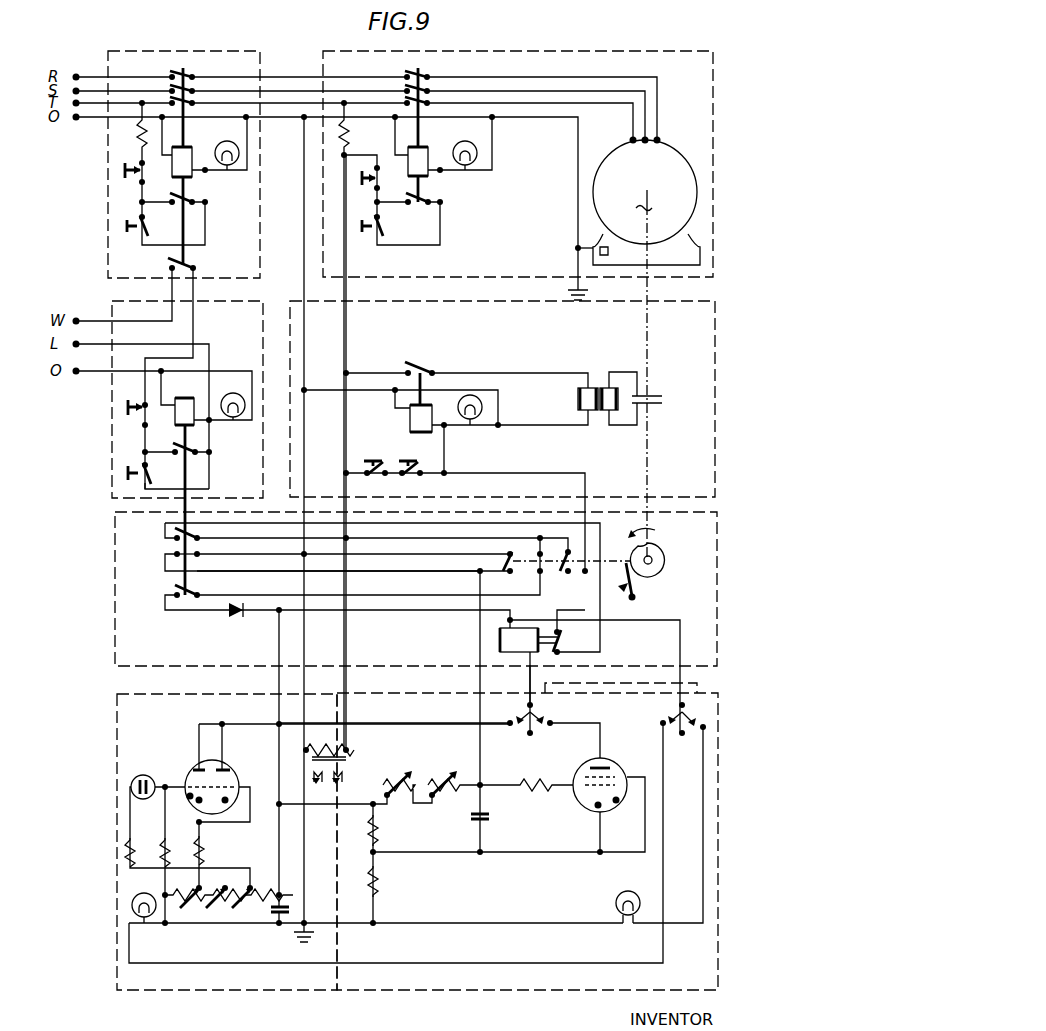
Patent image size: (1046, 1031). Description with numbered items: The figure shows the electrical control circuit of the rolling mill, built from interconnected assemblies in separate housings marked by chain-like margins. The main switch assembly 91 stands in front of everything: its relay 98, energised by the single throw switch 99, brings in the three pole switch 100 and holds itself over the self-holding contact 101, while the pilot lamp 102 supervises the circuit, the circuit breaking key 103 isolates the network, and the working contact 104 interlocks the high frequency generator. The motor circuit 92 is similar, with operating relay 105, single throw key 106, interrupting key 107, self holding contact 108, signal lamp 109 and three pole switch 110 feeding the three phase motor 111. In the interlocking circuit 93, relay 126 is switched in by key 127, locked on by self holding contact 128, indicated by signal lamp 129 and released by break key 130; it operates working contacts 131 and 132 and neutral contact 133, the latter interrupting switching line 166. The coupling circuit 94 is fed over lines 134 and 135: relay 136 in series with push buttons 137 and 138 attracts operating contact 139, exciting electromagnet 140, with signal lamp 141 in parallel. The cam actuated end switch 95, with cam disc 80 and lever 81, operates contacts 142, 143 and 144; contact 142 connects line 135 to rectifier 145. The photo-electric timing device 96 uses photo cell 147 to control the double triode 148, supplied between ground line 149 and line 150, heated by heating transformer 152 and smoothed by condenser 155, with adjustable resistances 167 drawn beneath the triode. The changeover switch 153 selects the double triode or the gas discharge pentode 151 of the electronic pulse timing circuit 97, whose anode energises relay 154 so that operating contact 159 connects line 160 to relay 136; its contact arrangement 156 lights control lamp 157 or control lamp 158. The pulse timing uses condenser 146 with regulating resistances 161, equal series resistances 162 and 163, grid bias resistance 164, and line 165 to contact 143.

The cam disc 80 is at (666, 558).
The lever 81 is at (638, 592).
The main switch assembly 91 is at (254, 52).
The motor circuit 92 is at (670, 52).
The interlocking circuit 93 is at (112, 396).
The switching circuit of the mechanical coupling 94 is at (708, 301).
The cam actuated end switch 95 is at (115, 590).
The photo-electrically operating timing device 96 is at (117, 750).
The electronic pulse timing circuit 97 is at (358, 990).
The relay 98 is at (186, 155).
The single throw switch 99 is at (134, 238).
The three pole switch 100 is at (174, 70).
The self-holding contact 101 is at (170, 203).
The pilot lamp 102 is at (240, 156).
The circuit breaking key 103 is at (122, 170).
The working contact 104 is at (196, 262).
The operating relay 105 is at (424, 155).
The single throw key 106 is at (367, 237).
The interrupting key 107 is at (362, 180).
The self holding contact 108 is at (420, 206).
The signal lamp 109 is at (478, 156).
The three pole switch 110 is at (422, 70).
The three phase motor 111 is at (660, 150).
The relay 126 is at (184, 404).
The switching in key 127 is at (125, 473).
The self holding contact 128 is at (197, 450).
The signal lamp 129 is at (234, 392).
The break key 130 is at (127, 412).
The working contact 131 is at (201, 534).
The working contact 132 is at (170, 590).
The neutral contact 133 is at (170, 556).
The line 134 is at (305, 324).
The line 135 is at (348, 322).
The relay 136 is at (410, 418).
The push button switching key 137 is at (372, 478).
The push button switching key 138 is at (410, 478).
The operating contact 139 is at (420, 366).
The electromagnet 140 is at (592, 385).
The signal lamp 141 is at (482, 404).
The contact 142 is at (557, 567).
The contact 143 is at (507, 573).
The contact 144 is at (565, 562).
The rectifier 145 is at (238, 618).
The condenser 146 is at (495, 817).
The photo cell 147 is at (146, 775).
The gas filled double triode 148 is at (233, 784).
The ground line 149 is at (272, 925).
The line 150 is at (279, 748).
The gas discharge pentode 151 is at (590, 806).
The heating transformer 152 is at (352, 752).
The changeover switch 153 is at (533, 716).
The relay 154 is at (500, 640).
The condenser 155 is at (291, 908).
The contact arrangement 156 is at (680, 714).
The control lamp 157 is at (140, 895).
The control lamp 158 is at (630, 890).
The operating contact 159 is at (560, 650).
The line 160 is at (586, 487).
The regulating resistances 161 is at (397, 784).
The series resistance 162 is at (380, 835).
The series resistance 163 is at (380, 882).
The grid bias resistance 164 is at (531, 783).
The line 165 is at (482, 690).
The switching line 166 is at (386, 573).
The potentiometer 167 is at (240, 910).